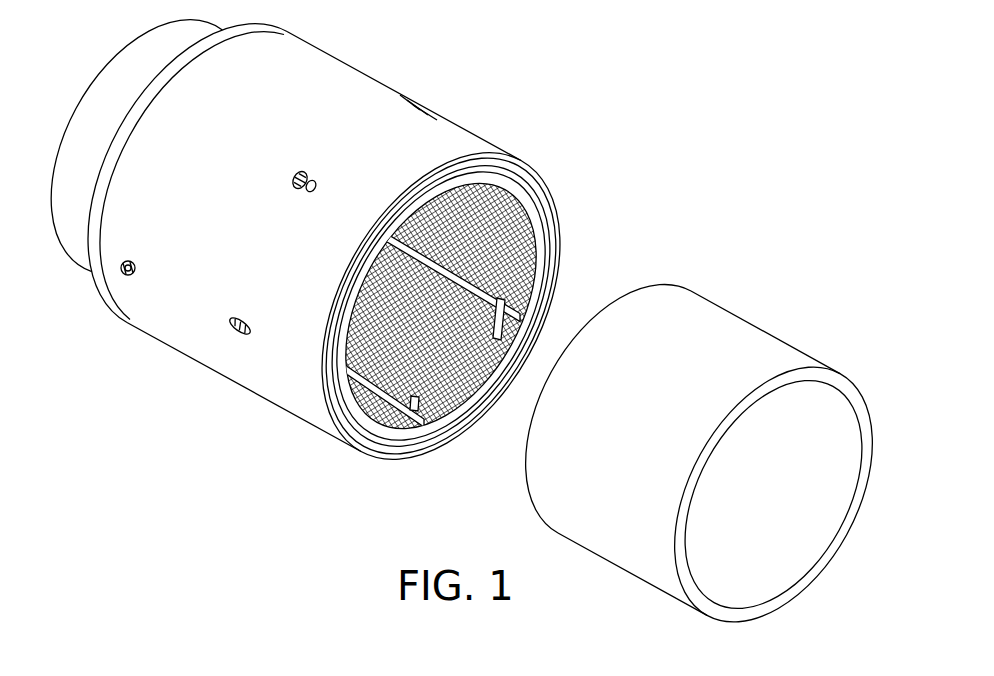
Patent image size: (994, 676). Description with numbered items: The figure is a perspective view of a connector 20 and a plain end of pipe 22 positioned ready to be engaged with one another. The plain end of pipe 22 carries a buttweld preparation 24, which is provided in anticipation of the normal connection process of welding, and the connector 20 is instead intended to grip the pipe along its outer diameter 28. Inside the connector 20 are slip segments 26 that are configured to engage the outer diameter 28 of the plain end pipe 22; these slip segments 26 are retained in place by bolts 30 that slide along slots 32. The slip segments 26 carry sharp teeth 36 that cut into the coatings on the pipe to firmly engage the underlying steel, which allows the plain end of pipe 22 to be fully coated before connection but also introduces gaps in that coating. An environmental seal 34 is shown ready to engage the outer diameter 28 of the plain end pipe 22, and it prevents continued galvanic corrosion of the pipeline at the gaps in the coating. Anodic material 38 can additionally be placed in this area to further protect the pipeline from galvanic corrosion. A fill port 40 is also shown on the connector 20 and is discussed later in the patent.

The connector 20 is at (333, 43).
The plain end of pipe 22 is at (720, 415).
The buttweld preparation 24 is at (612, 303).
The slip segments 26 is at (500, 245).
The outer diameter 28 is at (750, 323).
The bolts 30 is at (293, 175).
The slots 32 is at (313, 182).
The environmental seal 34 is at (542, 302).
The sharp teeth 36 is at (353, 418).
The anodic material 38 is at (397, 445).
The fill port 40 is at (123, 269).